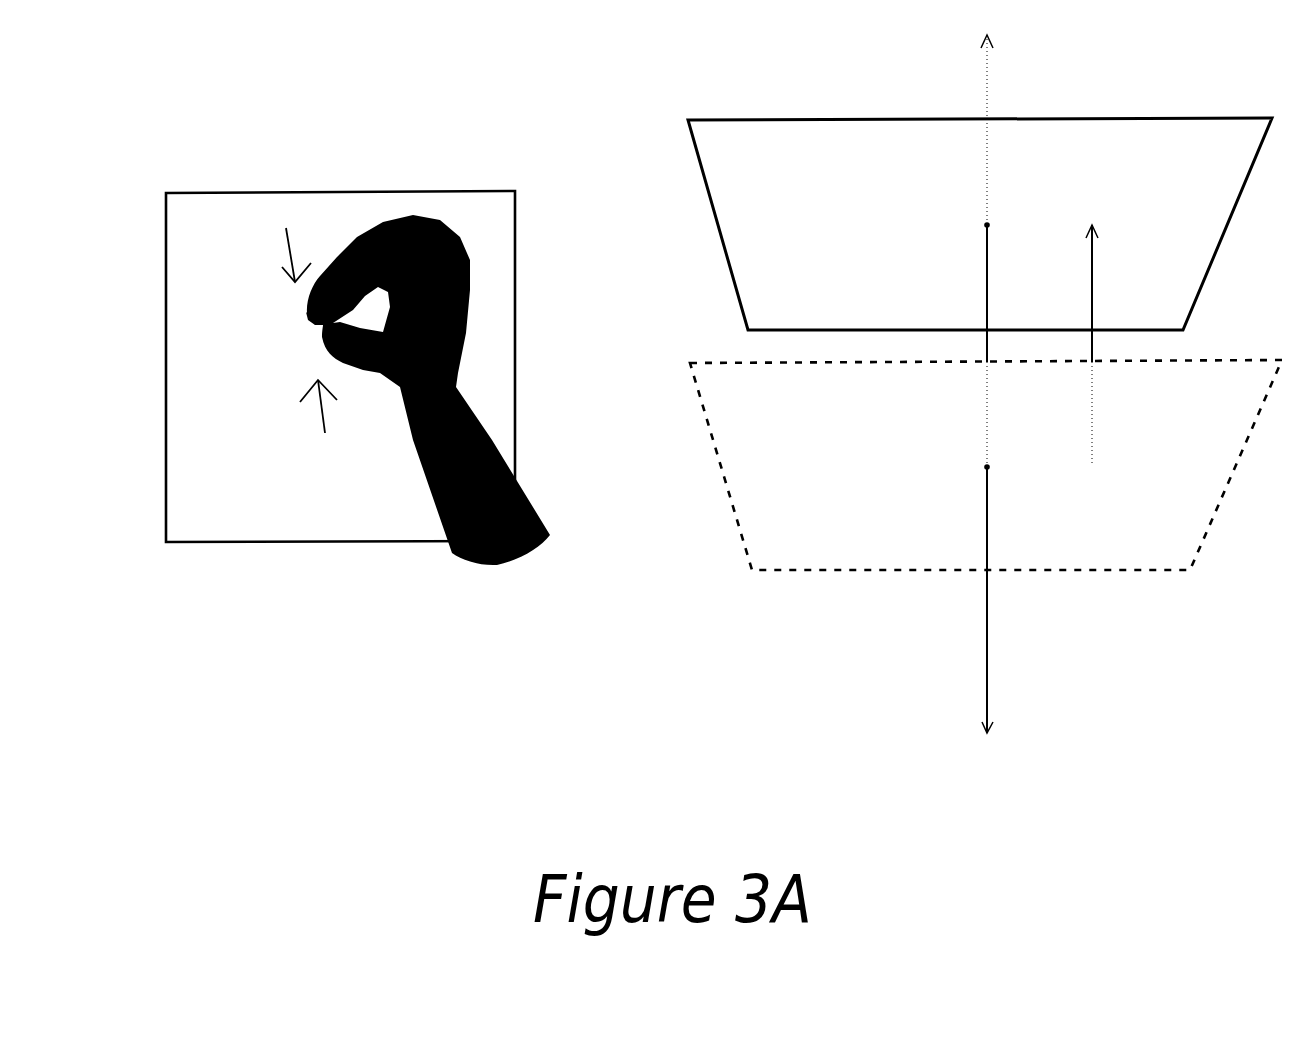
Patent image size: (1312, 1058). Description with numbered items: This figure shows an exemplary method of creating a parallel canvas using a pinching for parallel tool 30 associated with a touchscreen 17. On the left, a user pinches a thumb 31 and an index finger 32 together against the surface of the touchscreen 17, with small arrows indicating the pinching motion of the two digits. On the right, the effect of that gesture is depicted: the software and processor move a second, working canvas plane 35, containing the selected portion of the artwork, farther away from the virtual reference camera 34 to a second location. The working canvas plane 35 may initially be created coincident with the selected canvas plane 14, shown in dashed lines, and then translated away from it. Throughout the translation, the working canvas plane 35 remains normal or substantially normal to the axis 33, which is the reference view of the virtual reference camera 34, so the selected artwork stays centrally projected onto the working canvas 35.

The selected canvas plane 14 is at (1130, 570).
The touchscreen 17 is at (165, 472).
The pinching for parallel tool 30 is at (366, 160).
The thumb 31 is at (347, 363).
The index finger 32 is at (332, 278).
The axis 33 is at (987, 610).
The virtual reference camera 34 is at (988, 735).
The second, working canvas plane 35 is at (1033, 120).